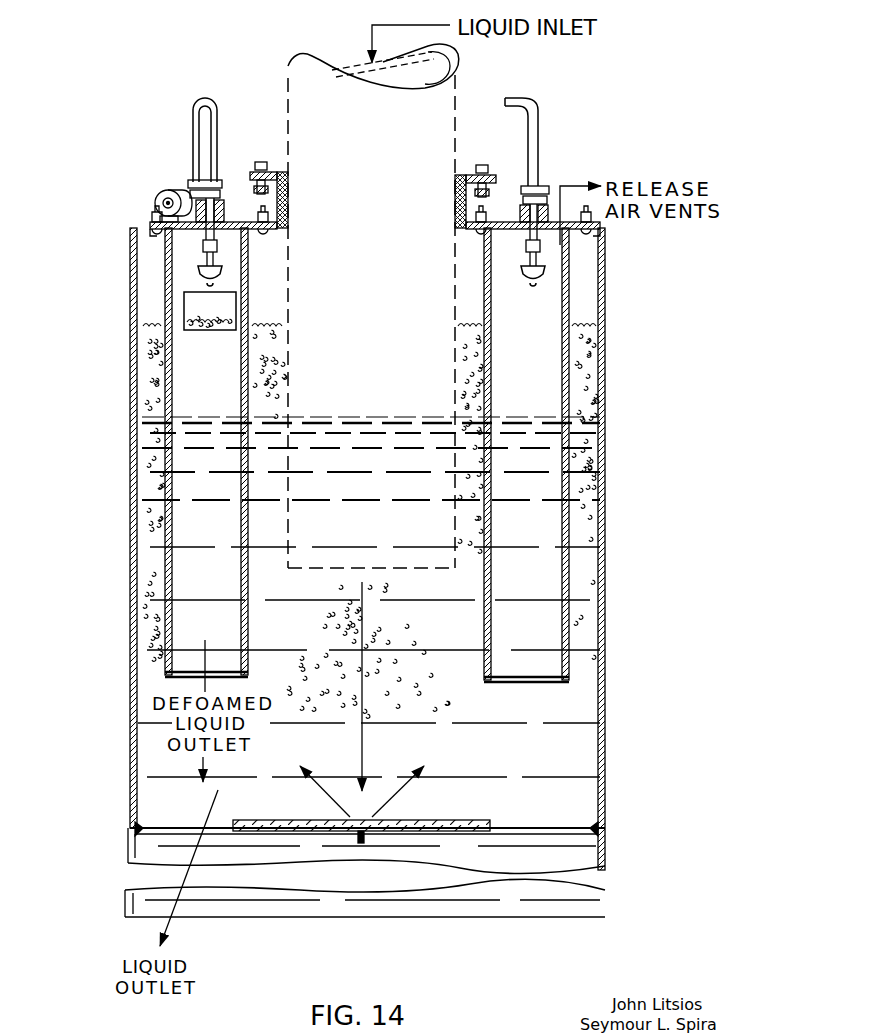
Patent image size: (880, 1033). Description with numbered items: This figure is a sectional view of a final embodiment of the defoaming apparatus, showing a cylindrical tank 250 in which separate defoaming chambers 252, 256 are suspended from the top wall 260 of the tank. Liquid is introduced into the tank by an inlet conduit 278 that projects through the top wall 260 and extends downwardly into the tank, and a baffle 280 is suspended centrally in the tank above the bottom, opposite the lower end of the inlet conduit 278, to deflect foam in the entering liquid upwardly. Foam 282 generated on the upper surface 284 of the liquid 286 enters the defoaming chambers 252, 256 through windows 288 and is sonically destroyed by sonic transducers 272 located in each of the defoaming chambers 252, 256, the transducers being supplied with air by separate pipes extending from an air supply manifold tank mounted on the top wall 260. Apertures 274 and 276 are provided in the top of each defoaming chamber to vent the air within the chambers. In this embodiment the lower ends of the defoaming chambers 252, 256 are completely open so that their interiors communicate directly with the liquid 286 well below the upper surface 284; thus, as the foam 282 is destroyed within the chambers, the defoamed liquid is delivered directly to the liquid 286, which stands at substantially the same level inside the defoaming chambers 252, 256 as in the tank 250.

The cylindrical tank 250 is at (132, 440).
The defoaming chamber 252 is at (165, 374).
The defoaming chamber 256 is at (574, 300).
The top wall 260 is at (149, 222).
The sonic transducer 272 is at (198, 275).
The aperture 274 is at (190, 232).
The aperture 276 is at (240, 222).
The inlet conduit 278 is at (284, 78).
The baffle 280 is at (432, 820).
The foam 282 is at (592, 376).
The upper surface 284 is at (595, 418).
The liquid 286 is at (445, 728).
The window 288 is at (193, 297).